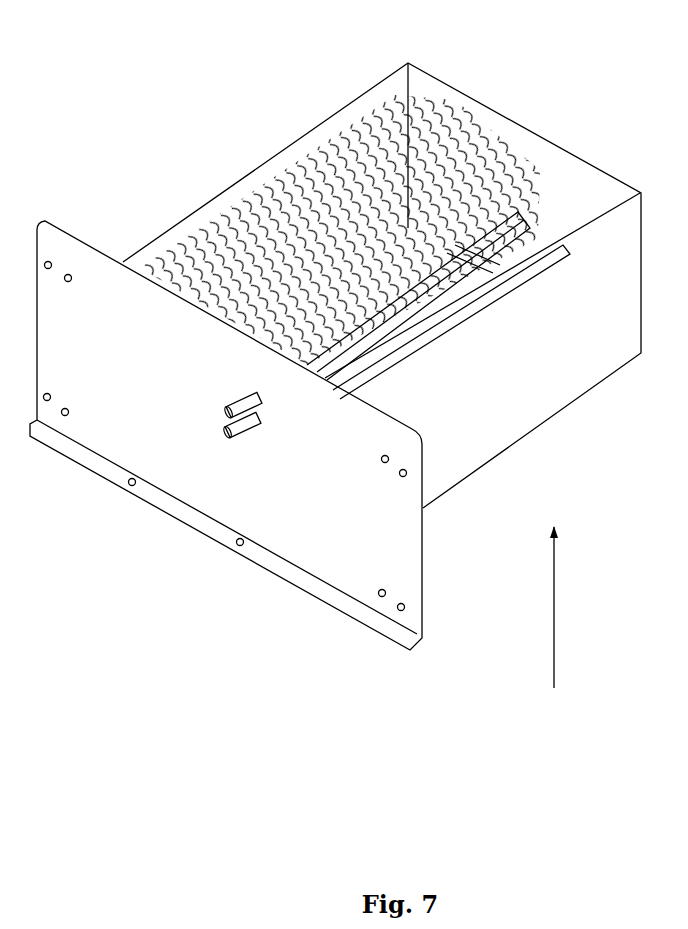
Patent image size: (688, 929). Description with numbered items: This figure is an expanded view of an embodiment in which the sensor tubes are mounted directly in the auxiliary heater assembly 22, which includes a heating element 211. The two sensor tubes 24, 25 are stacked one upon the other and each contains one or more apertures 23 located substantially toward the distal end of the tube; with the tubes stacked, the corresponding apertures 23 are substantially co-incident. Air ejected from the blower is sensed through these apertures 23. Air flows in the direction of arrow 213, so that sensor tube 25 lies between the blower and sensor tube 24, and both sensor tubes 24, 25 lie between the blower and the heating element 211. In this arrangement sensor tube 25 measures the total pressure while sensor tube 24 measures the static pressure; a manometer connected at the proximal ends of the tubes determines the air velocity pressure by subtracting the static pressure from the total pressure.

The auxiliary heater assembly 22 is at (215, 155).
The heating element 211 is at (394, 113).
The apertures 23 is at (428, 284).
The sensor tube 24 is at (230, 403).
The sensor tube 25 is at (249, 440).
The arrow 213 is at (578, 607).